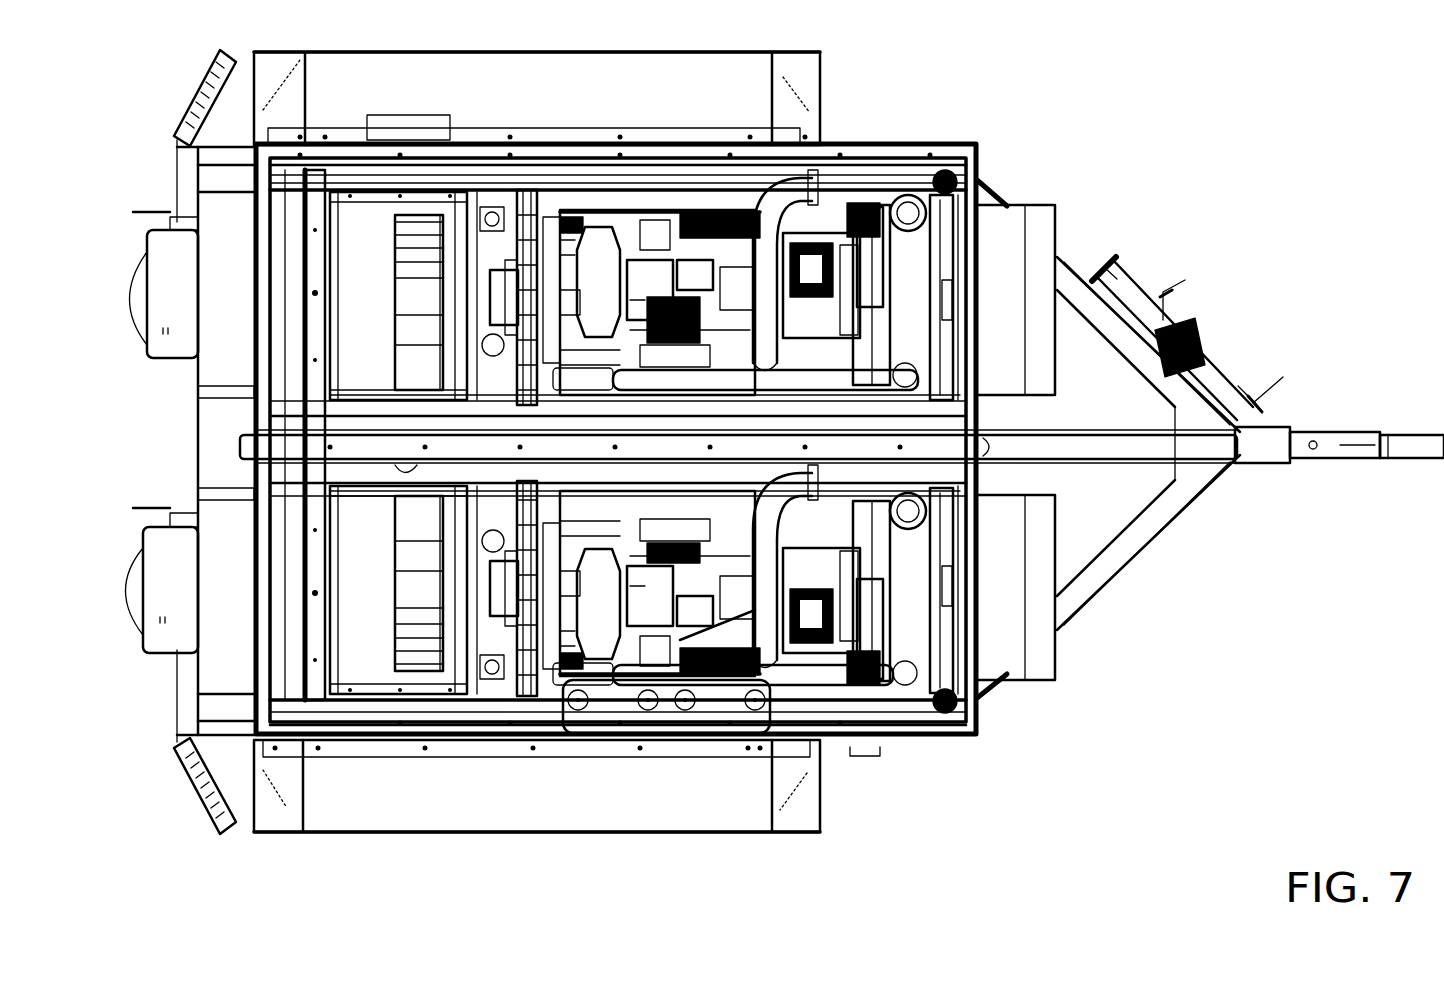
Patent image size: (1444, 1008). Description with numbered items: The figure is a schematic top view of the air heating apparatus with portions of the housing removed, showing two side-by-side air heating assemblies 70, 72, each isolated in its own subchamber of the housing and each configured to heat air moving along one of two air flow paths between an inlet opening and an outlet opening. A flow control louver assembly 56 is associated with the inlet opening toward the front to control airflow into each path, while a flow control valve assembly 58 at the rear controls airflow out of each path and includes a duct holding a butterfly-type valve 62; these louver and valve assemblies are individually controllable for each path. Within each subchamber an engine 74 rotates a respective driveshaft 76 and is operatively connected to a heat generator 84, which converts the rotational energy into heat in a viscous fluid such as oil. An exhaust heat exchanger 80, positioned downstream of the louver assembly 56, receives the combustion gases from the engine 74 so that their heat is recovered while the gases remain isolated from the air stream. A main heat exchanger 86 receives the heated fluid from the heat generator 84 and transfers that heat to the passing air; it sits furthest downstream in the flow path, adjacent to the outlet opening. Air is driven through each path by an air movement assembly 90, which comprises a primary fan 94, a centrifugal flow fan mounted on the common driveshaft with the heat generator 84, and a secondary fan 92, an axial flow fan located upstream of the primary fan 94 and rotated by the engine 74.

The flow control louver assembly 56 is at (1078, 548).
The flow control valve assembly 58 is at (122, 537).
The butterfly-type valve 62 is at (132, 613).
The air heating assembly 70 is at (927, 770).
The air heating assembly 72 is at (1012, 170).
The engine 74 is at (785, 160).
The driveshaft 76 is at (575, 195).
The exhaust heat exchanger 80 is at (935, 648).
The heat generator 84 is at (488, 685).
The main heat exchanger 86 is at (422, 692).
The air movement assembly 90 is at (378, 660).
The secondary fan 92 is at (825, 620).
The primary fan 94 is at (398, 672).